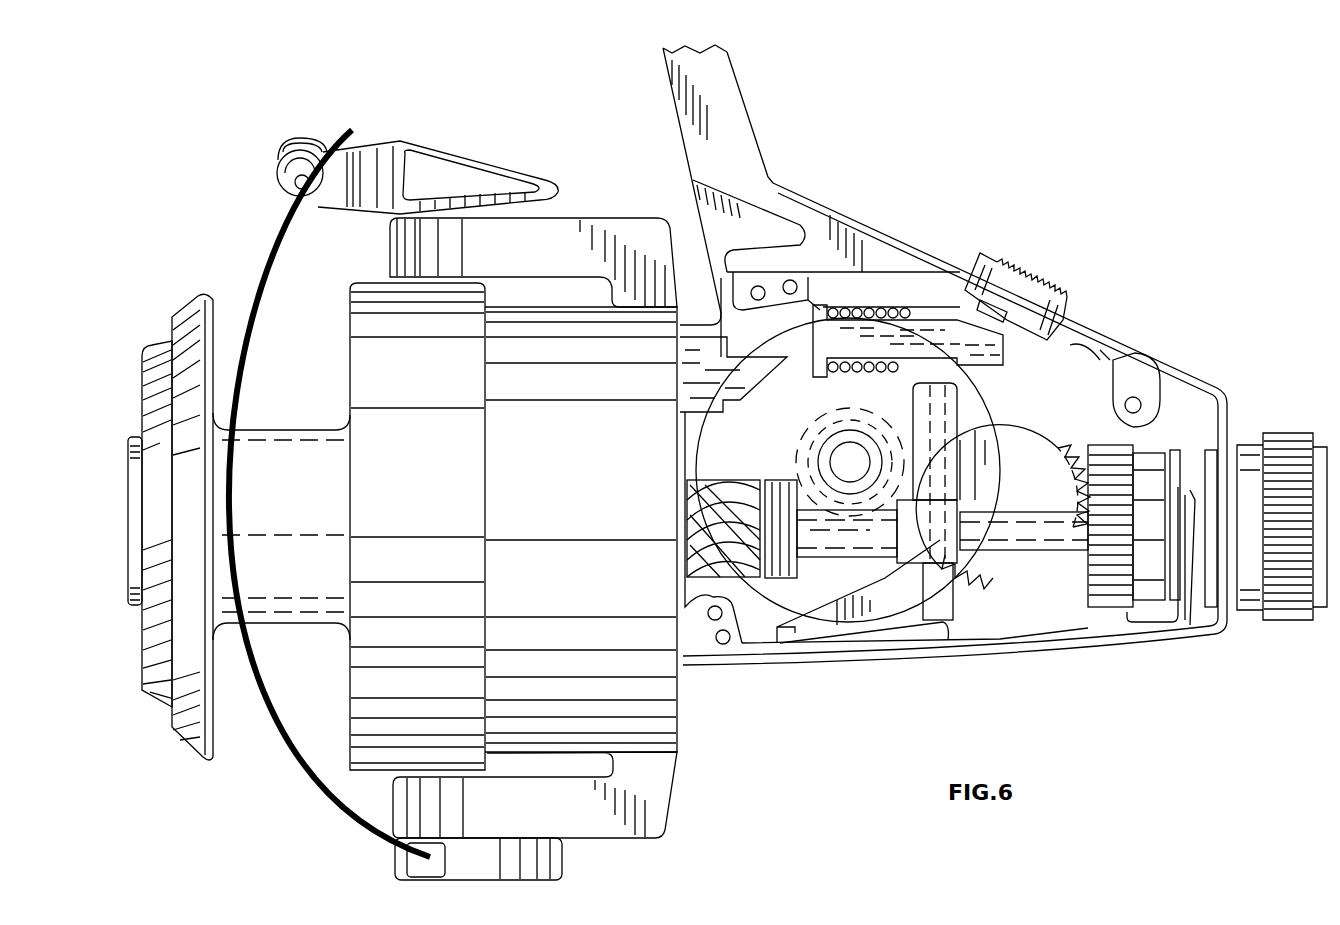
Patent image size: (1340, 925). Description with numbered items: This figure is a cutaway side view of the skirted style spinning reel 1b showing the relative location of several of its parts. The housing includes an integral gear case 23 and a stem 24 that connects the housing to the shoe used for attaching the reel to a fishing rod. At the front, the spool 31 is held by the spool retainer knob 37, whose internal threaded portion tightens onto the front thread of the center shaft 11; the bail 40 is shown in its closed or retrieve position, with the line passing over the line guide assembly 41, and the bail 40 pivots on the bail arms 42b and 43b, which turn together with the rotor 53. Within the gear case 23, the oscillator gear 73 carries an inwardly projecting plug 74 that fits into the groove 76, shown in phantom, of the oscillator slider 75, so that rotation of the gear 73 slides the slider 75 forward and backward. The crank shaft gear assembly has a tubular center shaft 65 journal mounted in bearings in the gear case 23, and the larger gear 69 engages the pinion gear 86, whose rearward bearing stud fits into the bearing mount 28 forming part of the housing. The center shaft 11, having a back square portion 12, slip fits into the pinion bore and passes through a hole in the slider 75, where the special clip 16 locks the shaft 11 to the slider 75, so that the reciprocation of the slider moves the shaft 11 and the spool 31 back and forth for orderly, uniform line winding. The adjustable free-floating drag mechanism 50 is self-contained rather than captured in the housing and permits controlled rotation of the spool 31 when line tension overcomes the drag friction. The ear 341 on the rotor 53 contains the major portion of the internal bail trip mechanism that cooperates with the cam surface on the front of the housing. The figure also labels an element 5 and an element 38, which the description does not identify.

The skirted reel 1b is at (932, 178).
The push button 5 is at (1010, 330).
The center shaft 11 is at (840, 535).
The back square portion 12 is at (1047, 530).
The special clip 16 is at (893, 558).
The gear case 23 is at (1175, 365).
The stem 24 is at (730, 100).
The bearing mount 28 is at (783, 557).
The spool 31 is at (383, 670).
The spool retainer knob 37 is at (155, 655).
The drag knob front 38 is at (128, 475).
The bail 40 is at (310, 790).
The line guide assembly 41 is at (285, 180).
The bail arm 42b is at (557, 866).
The bail arm 43b is at (495, 150).
The drag mechanism 50 is at (1150, 610).
The rotor 53 is at (650, 713).
The tubular center shaft 65 is at (842, 462).
The larger gear 69 is at (975, 397).
The oscillator gear 73 is at (1063, 455).
The inwardly projecting plug 74 is at (990, 484).
The oscillator slider 75 is at (915, 397).
The groove 76 is at (985, 458).
The pinion gear 86 is at (724, 490).
The ear 341 is at (612, 300).